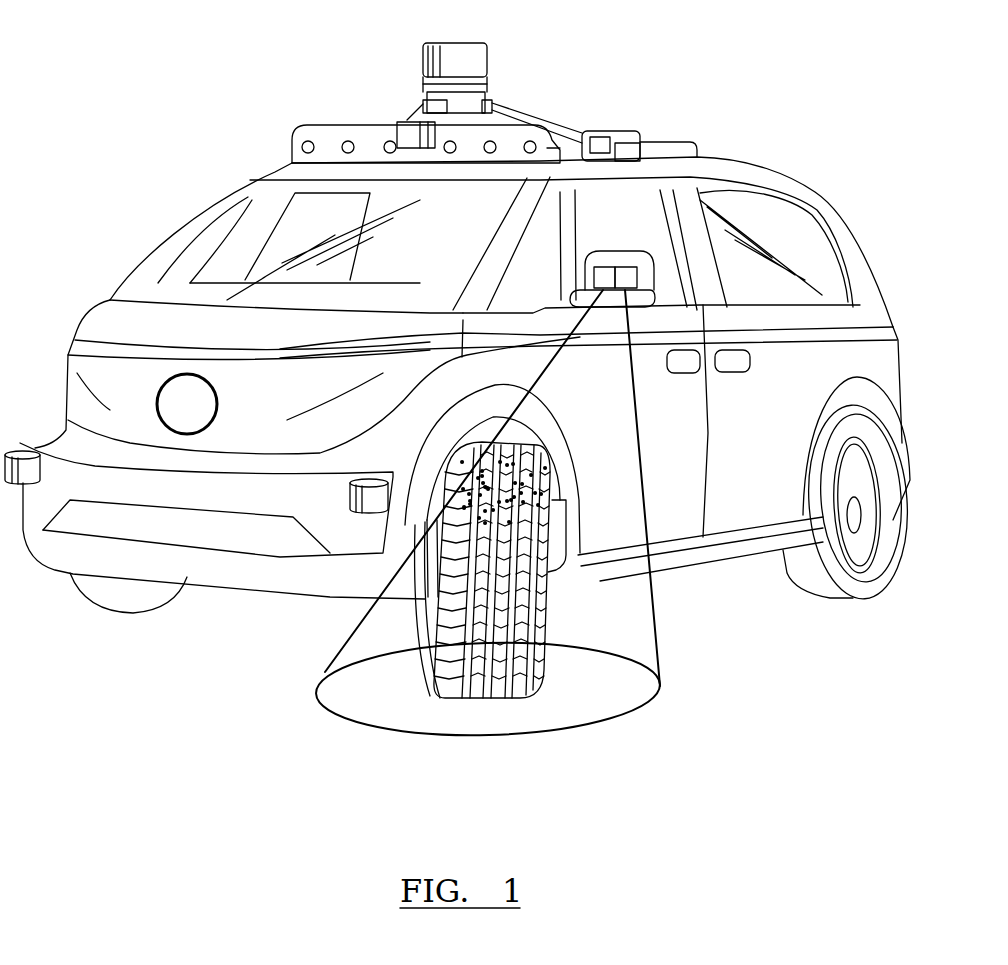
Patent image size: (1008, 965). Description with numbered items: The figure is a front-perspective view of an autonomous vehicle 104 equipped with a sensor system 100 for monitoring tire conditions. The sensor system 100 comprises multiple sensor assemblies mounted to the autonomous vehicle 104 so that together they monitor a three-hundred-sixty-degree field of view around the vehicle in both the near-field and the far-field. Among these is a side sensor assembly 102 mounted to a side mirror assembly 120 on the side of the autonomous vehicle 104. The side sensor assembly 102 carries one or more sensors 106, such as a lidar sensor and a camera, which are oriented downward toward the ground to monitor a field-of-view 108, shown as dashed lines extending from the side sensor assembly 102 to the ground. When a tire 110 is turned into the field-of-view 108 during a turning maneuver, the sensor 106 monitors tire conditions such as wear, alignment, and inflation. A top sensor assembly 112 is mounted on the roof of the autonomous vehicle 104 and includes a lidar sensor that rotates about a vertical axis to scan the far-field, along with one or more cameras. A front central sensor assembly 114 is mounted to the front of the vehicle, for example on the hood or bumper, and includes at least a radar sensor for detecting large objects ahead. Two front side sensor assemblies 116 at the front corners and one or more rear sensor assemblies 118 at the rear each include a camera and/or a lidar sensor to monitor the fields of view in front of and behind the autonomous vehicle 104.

The sensor system 100 is at (93, 56).
The side sensor assembly 102 is at (611, 246).
The autonomous vehicle 104 is at (850, 210).
The sensor 106 is at (643, 277).
The field-of-view 108 is at (663, 686).
The tire 110 is at (546, 586).
The top sensor assembly 112 is at (492, 85).
The front central sensor assembly 114 is at (170, 417).
The front side sensor assemblies 116 is at (347, 496).
The rear sensor assembly 118 is at (882, 290).
The side mirror assembly 120 is at (628, 247).